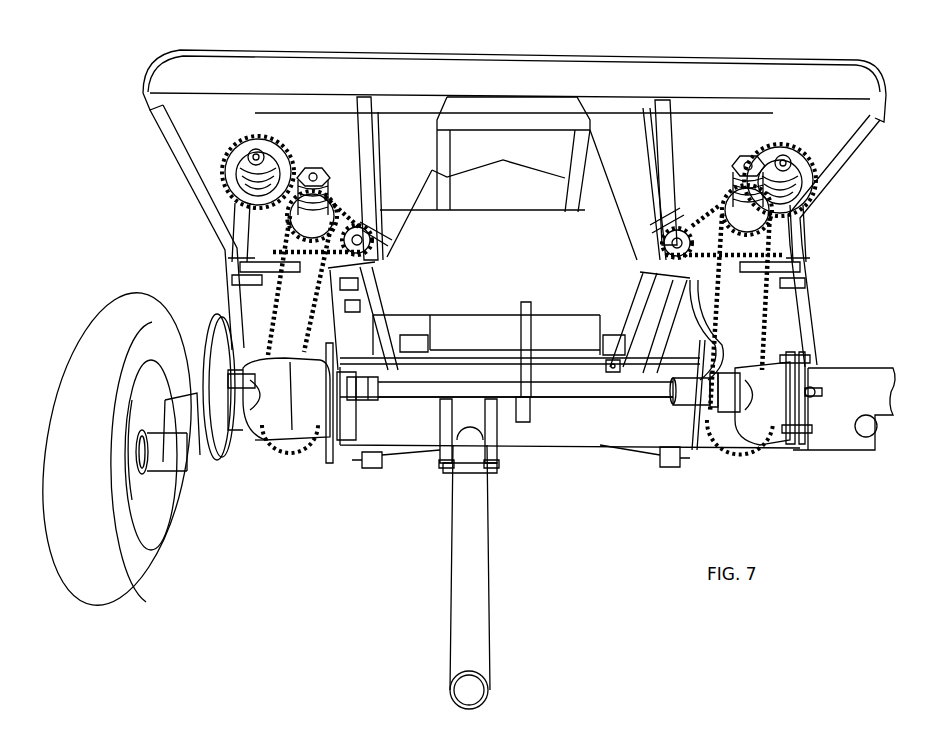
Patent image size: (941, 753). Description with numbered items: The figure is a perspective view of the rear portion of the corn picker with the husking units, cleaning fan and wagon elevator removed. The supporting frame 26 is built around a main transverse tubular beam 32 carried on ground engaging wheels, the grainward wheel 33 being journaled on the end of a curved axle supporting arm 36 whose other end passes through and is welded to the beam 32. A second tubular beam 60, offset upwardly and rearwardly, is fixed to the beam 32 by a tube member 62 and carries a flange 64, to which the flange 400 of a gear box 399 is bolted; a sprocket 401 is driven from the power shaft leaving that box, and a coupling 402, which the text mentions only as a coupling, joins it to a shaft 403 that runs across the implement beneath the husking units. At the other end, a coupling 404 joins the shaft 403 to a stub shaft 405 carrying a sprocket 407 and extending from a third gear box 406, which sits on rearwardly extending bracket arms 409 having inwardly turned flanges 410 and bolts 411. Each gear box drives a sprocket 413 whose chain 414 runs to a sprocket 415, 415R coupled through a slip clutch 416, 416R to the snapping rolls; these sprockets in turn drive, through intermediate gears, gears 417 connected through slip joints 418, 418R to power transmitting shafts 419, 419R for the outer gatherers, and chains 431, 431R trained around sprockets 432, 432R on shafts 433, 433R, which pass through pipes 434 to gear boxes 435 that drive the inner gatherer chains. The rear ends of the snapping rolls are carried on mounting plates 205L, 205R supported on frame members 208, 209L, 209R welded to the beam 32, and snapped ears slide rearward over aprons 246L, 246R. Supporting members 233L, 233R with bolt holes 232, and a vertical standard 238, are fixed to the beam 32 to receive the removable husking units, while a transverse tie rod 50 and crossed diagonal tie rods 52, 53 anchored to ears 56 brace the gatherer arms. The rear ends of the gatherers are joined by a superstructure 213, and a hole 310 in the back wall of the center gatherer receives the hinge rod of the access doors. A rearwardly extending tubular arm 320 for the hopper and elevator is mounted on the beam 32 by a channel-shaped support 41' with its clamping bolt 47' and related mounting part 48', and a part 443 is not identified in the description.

The superstructure 213 is at (530, 70).
The frame member 209L is at (230, 298).
The frame member 209R is at (800, 315).
The hole 310 is at (506, 250).
The slip joint mechanism 418 is at (237, 175).
The slip joint mechanism 418R is at (805, 178).
The gear 417 is at (233, 190).
The power transmitting shaft 419 is at (254, 150).
The power transmitting shaft 419R is at (789, 163).
The slip clutch mechanism 416 is at (300, 168).
The slip clutch mechanism 416R is at (758, 158).
The sprocket 415 is at (334, 210).
The sprocket 415R is at (724, 192).
The shaft 433 is at (372, 243).
The shaft 433R is at (662, 245).
The sprocket 432 is at (370, 223).
The sprocket 432R is at (668, 232).
The chain 431 is at (240, 225).
The chain 431R is at (792, 224).
The apron 246L is at (358, 285).
The apron 246R is at (650, 294).
The bolt hole 232 is at (360, 282).
The supporting member 233L is at (362, 306).
The supporting member 233R is at (608, 350).
The pipe 434 is at (400, 330).
The gear box 435 is at (418, 343).
The transverse tie rod 50 is at (480, 358).
The standard 238 is at (528, 305).
The mounting plate 205L is at (258, 257).
The mounting plate 205R is at (778, 262).
The flexible power transmission chain 414 is at (262, 268).
The ground engaging wheel 33 is at (103, 596).
The axle supporting arm 36 is at (173, 457).
The disc 443 is at (205, 362).
The bracket arm 409 is at (247, 430).
The bolt 411 is at (272, 398).
The supporting flange 410 is at (212, 340).
The sprocket 413 is at (283, 442).
The third gear box 406 is at (263, 452).
The stub shaft 405 is at (292, 432).
The sprocket 407 is at (362, 396).
The coupling 404 is at (383, 382).
The connecting shaft 403 is at (560, 390).
The frame member 208 is at (657, 386).
The flange 402 is at (700, 402).
The main transverse tubular supporting beam 32 is at (607, 440).
The channel-shaped support 41' is at (484, 442).
The clamping bolt 47' is at (445, 434).
The bar 48' is at (453, 485).
The tubular arm 320 is at (480, 603).
The diagonal tie rod 52 is at (402, 448).
The ear 56 is at (372, 468).
The diagonal tie rod 53 is at (628, 452).
The supporting frame 26 is at (580, 461).
The flange 400 is at (790, 440).
The sprocket 401 is at (695, 447).
The second gear box 399 is at (795, 385).
The second transverse tubular frame beam 60 is at (850, 375).
The flange 64 is at (816, 392).
The member 62 is at (866, 420).